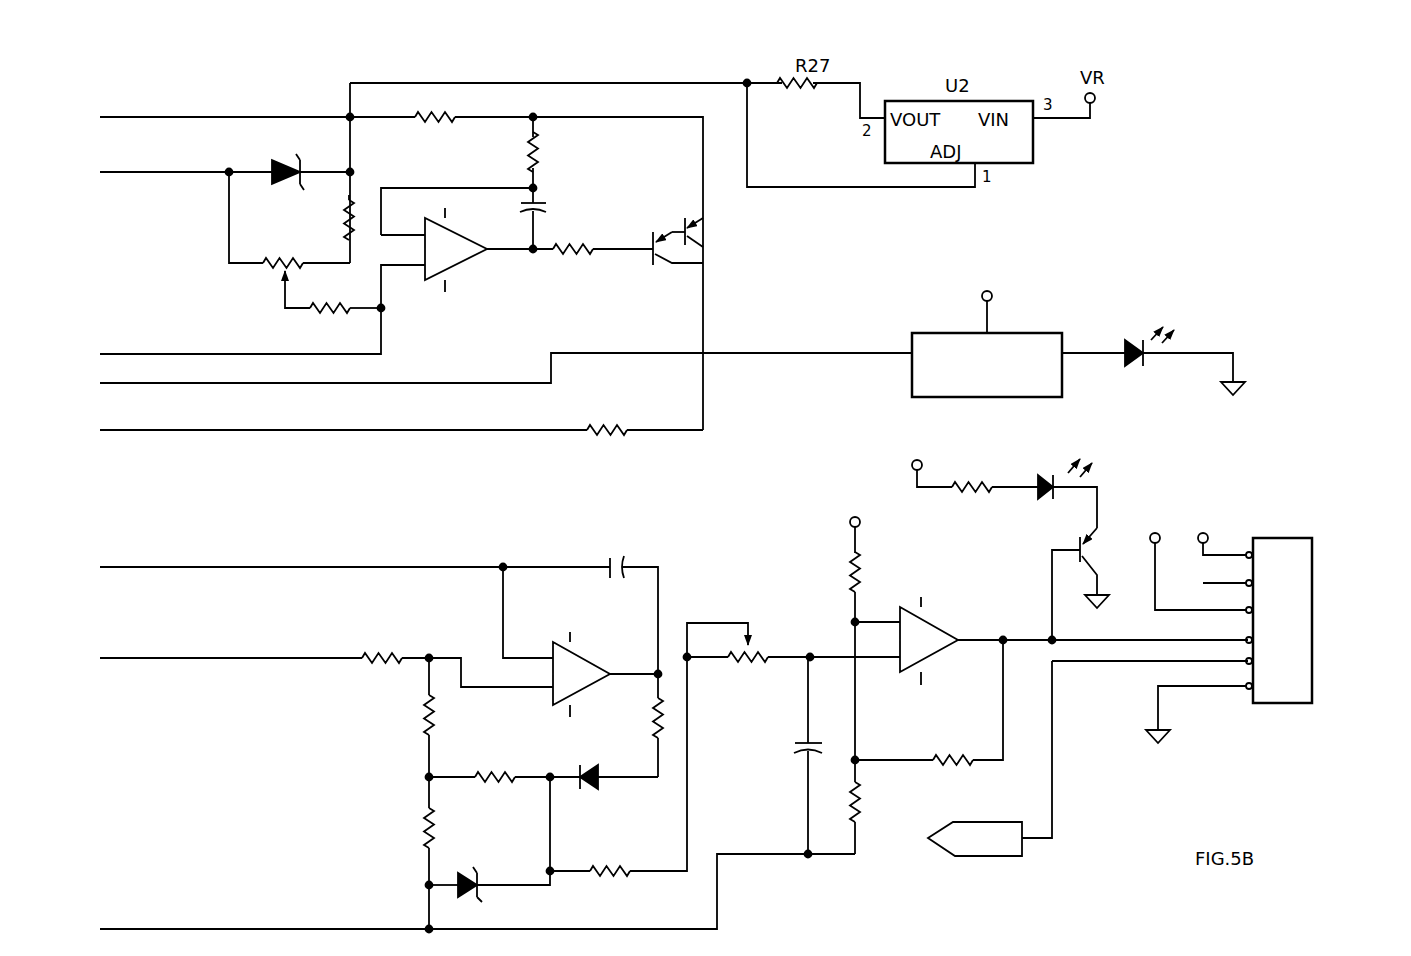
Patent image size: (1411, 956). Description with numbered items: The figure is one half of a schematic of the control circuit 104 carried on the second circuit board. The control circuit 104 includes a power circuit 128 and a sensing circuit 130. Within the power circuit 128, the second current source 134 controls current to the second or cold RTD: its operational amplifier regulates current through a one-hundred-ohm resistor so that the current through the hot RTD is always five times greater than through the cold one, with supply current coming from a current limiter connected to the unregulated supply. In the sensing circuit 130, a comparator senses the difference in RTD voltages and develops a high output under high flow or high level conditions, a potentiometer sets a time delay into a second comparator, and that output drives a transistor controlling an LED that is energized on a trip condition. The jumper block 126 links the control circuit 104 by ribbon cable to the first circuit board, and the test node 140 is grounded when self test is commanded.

The second current source 134 is at (303, 84).
The power circuit 128 is at (762, 267).
The control circuit 104 is at (1240, 236).
The sensing circuit 130 is at (378, 535).
The jumper block 126 is at (1308, 578).
The test node 140 is at (1012, 848).